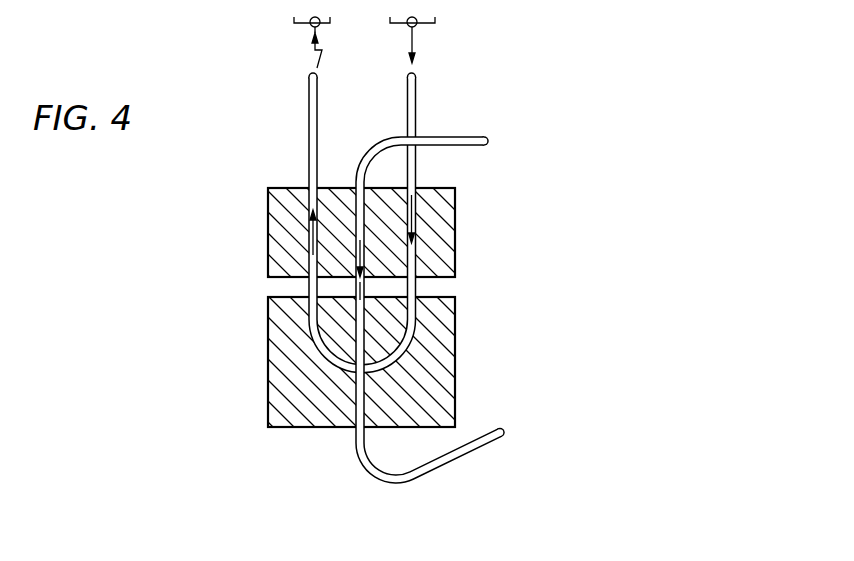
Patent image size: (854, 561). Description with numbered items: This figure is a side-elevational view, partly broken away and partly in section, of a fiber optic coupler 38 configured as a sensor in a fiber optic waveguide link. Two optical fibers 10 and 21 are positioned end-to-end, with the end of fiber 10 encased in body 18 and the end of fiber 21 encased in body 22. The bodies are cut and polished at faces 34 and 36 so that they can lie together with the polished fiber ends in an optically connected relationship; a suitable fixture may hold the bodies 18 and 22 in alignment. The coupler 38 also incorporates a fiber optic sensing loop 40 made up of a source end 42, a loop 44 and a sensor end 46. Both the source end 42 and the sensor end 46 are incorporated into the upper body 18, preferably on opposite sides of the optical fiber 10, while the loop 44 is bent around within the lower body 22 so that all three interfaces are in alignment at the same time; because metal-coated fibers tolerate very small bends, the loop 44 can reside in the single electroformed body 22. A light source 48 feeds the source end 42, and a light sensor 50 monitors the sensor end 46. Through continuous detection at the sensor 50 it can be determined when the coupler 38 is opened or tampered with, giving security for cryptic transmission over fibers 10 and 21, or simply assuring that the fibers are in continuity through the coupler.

The fiber 10 is at (457, 148).
The body 18 is at (455, 234).
The fiber 21 is at (465, 457).
The body 22 is at (446, 325).
The face 34 is at (283, 276).
The face 36 is at (285, 298).
The coupler 38 is at (242, 285).
The fiber optic sensing loop 40 is at (420, 89).
The source end 42 is at (418, 124).
The loop 44 is at (402, 357).
The sensor end 46 is at (308, 131).
The light source 48 is at (436, 30).
The light sensor 50 is at (310, 25).